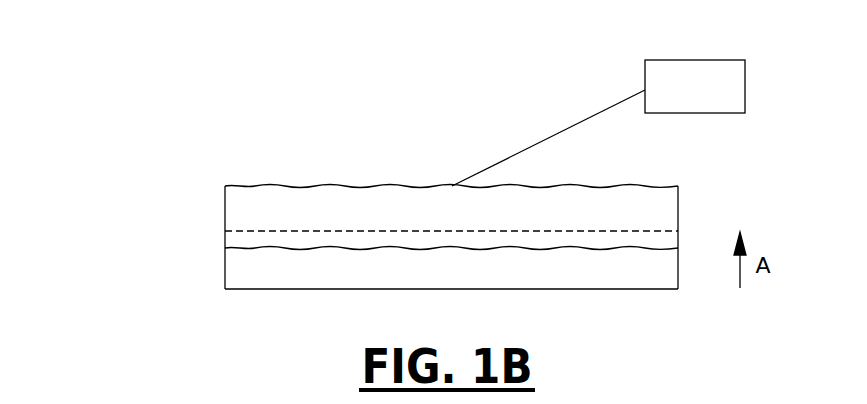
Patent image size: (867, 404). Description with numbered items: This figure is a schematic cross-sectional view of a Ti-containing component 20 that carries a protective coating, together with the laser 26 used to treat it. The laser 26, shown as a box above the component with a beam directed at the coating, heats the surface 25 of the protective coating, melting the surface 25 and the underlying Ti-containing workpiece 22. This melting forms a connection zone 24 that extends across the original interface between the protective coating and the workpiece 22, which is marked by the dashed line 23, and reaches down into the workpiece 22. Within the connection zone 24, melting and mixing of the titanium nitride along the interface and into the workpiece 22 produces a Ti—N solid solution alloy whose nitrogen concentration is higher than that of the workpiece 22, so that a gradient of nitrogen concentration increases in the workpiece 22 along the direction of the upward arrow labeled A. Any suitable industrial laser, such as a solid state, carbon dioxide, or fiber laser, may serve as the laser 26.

The component 20 is at (102, 165).
The workpiece 22 is at (238, 280).
The dashed line 23 is at (663, 224).
The connection zone 24 is at (238, 220).
The surface 25 is at (271, 186).
The laser 26 is at (683, 60).